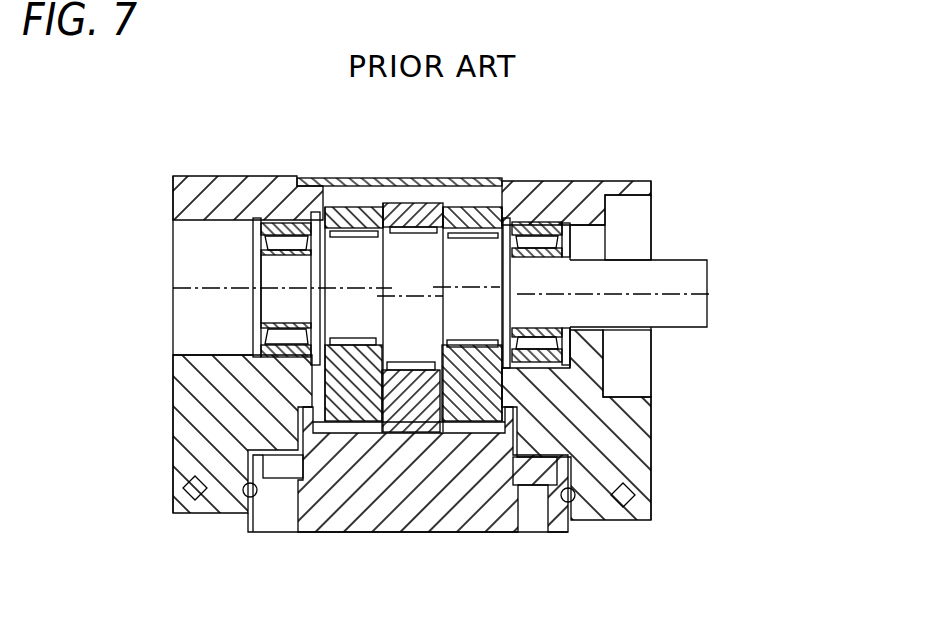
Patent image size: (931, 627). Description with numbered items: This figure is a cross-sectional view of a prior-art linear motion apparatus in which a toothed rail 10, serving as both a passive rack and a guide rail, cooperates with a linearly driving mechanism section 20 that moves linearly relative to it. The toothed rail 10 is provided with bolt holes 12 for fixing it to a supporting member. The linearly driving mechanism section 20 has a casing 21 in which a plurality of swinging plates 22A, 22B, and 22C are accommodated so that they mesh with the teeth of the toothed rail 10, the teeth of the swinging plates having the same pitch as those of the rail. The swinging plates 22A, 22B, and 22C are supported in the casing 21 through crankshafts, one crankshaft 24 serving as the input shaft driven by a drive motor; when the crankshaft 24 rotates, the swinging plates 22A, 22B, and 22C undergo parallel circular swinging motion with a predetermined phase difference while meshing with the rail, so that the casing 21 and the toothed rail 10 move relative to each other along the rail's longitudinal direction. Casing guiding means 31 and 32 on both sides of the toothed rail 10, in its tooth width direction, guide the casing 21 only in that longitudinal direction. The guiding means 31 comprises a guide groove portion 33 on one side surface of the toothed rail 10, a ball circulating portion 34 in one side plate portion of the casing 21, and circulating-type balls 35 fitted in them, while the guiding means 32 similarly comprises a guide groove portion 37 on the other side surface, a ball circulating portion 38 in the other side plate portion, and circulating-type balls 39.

The toothed rail 10 is at (431, 537).
The bolt holes 12 is at (273, 500).
The linearly driving mechanism section 20 is at (602, 164).
The casing 21 is at (658, 184).
The swinging plate 22A is at (353, 205).
The swinging plate 22B is at (417, 202).
The swinging plate 22C is at (480, 207).
The crankshaft 24 is at (672, 265).
The casing guiding means 31 is at (197, 527).
The casing guiding means 32 is at (610, 531).
The guide groove portion 33 is at (562, 466).
The ball circulating portion 34 is at (636, 495).
The circulating-type balls 35 is at (563, 505).
The guide groove portion 37 is at (257, 478).
The ball circulating portion 38 is at (183, 490).
The circulating-type balls 39 is at (252, 498).